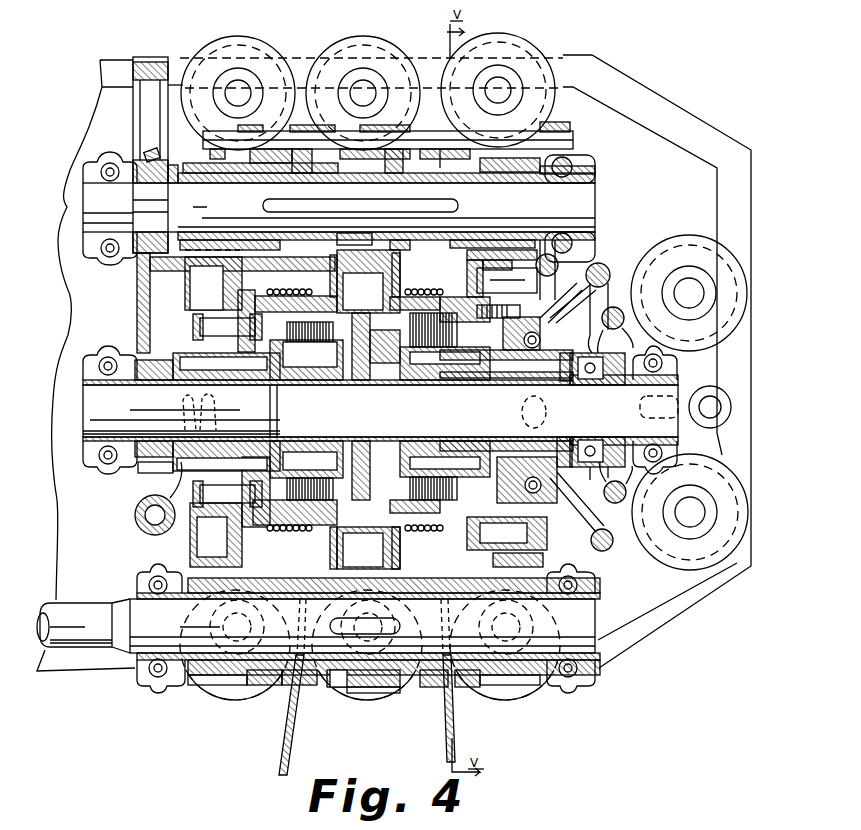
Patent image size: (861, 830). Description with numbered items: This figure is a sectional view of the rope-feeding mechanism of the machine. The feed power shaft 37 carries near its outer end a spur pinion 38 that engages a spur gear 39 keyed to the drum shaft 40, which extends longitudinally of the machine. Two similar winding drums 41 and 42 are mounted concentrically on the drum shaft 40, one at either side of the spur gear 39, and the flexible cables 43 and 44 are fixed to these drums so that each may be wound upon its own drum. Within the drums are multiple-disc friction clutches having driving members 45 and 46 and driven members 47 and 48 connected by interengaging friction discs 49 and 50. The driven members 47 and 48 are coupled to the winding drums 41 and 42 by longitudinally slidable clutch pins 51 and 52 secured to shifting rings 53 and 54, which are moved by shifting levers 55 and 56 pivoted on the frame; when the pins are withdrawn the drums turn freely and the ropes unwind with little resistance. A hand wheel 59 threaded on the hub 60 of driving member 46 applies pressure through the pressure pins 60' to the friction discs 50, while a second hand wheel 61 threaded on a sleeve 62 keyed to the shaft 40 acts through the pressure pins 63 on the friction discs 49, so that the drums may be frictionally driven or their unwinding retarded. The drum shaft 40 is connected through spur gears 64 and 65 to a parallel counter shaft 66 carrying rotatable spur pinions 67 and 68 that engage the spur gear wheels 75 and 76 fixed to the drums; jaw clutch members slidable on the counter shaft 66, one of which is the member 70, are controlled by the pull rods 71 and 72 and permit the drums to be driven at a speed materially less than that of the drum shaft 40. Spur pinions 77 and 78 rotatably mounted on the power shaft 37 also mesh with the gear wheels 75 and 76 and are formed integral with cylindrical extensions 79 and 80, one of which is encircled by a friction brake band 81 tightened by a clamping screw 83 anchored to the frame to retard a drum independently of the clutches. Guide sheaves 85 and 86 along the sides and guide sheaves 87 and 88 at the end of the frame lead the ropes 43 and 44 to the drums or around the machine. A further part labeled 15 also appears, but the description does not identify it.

The housing wall 15 is at (193, 578).
The feed power shaft 37 is at (583, 616).
The spur pinion 38 is at (367, 692).
The spur gear 39 is at (366, 258).
The drum shaft 40 is at (665, 389).
The winding drum 41 is at (332, 268).
The winding drum 42 is at (399, 285).
The flexible cable 43 is at (318, 288).
The flexible cable 44 is at (434, 312).
The driving member 45 is at (306, 441).
The driving member 46 is at (445, 406).
The driven member 47 is at (283, 289).
The driven member 48 is at (458, 338).
The friction discs 49 is at (306, 351).
The friction discs 50 is at (620, 566).
The clutch pin 51 is at (208, 320).
The clutch pin 52 is at (566, 282).
The shifting ring 53 is at (195, 316).
The shifting ring 54 is at (546, 331).
The shifting lever 55 is at (160, 494).
The shifting lever 56 is at (545, 300).
The hand wheel 59 is at (603, 282).
The hub 60 is at (588, 511).
The pressure pins 60' is at (531, 377).
The second hand wheel 61 is at (609, 469).
The sleeve 62 is at (627, 360).
The pressure pins 63 is at (376, 406).
The spur gear 64 is at (140, 466).
The spur gear 65 is at (147, 62).
The counter shaft 66 is at (574, 198).
The spur pinion 67 is at (192, 166).
The spur pinion 68 is at (290, 145).
The jaw clutch member 70 is at (441, 160).
The pull rod 71 is at (230, 140).
The pull rod 72 is at (566, 142).
The spur gear wheel 75 is at (227, 392).
The spur gear wheel 76 is at (478, 255).
The spur pinion 77 is at (215, 690).
The spur pinion 78 is at (506, 690).
The cylindrical extension 79 is at (272, 688).
The cylindrical extension 80 is at (433, 690).
The friction brake band 81 is at (302, 688).
The clamping screw 83 is at (462, 690).
The guide sheave 85 is at (238, 702).
The guide sheave 86 is at (262, 48).
The guide sheave 87 is at (728, 482).
The guide sheave 88 is at (726, 283).